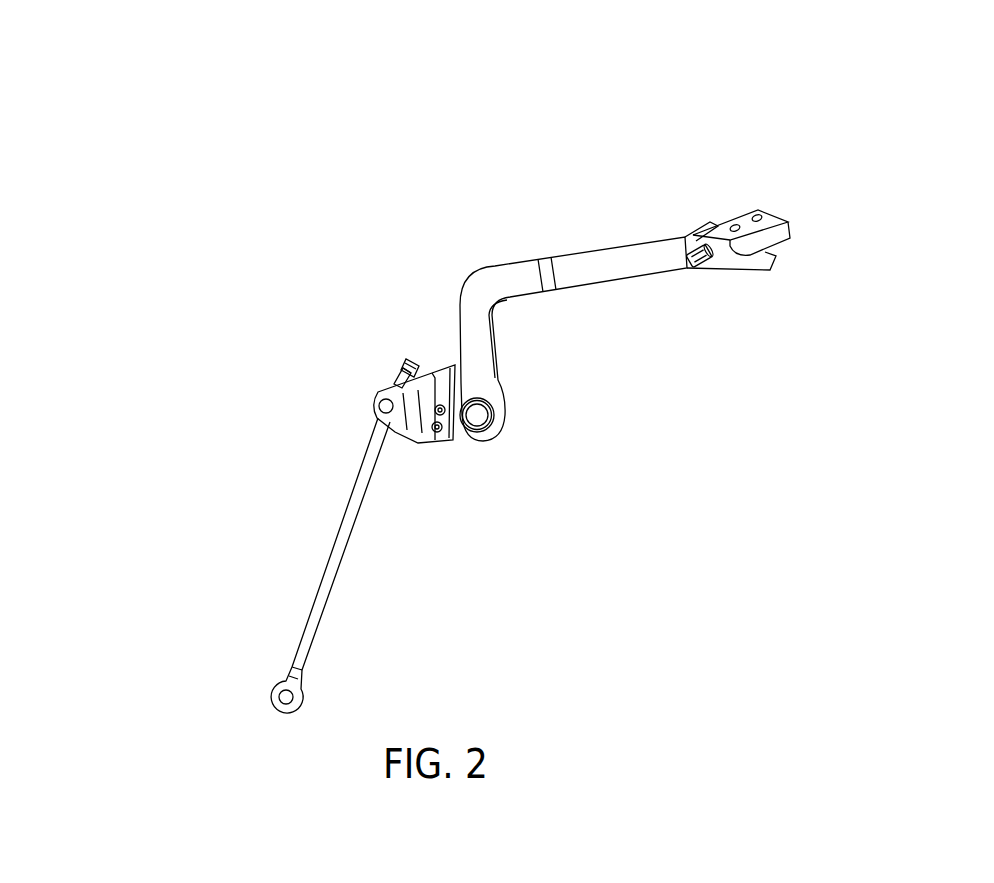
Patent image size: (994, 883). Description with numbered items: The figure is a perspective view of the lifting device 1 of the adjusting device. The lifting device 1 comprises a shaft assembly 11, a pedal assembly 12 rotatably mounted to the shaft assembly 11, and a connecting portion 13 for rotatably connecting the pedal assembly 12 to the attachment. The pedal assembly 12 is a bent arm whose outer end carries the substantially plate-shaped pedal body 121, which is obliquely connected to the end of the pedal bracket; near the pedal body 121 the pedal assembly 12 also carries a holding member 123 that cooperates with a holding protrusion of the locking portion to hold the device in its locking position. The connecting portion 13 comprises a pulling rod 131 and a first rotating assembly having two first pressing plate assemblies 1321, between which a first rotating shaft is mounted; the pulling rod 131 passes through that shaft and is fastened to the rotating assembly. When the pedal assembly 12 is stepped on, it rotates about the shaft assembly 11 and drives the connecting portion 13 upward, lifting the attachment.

The lifting device 1 is at (170, 57).
The shaft assembly 11 is at (503, 437).
The pedal assembly 12 is at (592, 223).
The pedal body 121 is at (743, 220).
The holding member 123 is at (687, 232).
The connecting portion 13 is at (320, 498).
The pulling rod 131 is at (308, 620).
The first pressing plate assembly 1321 is at (380, 388).